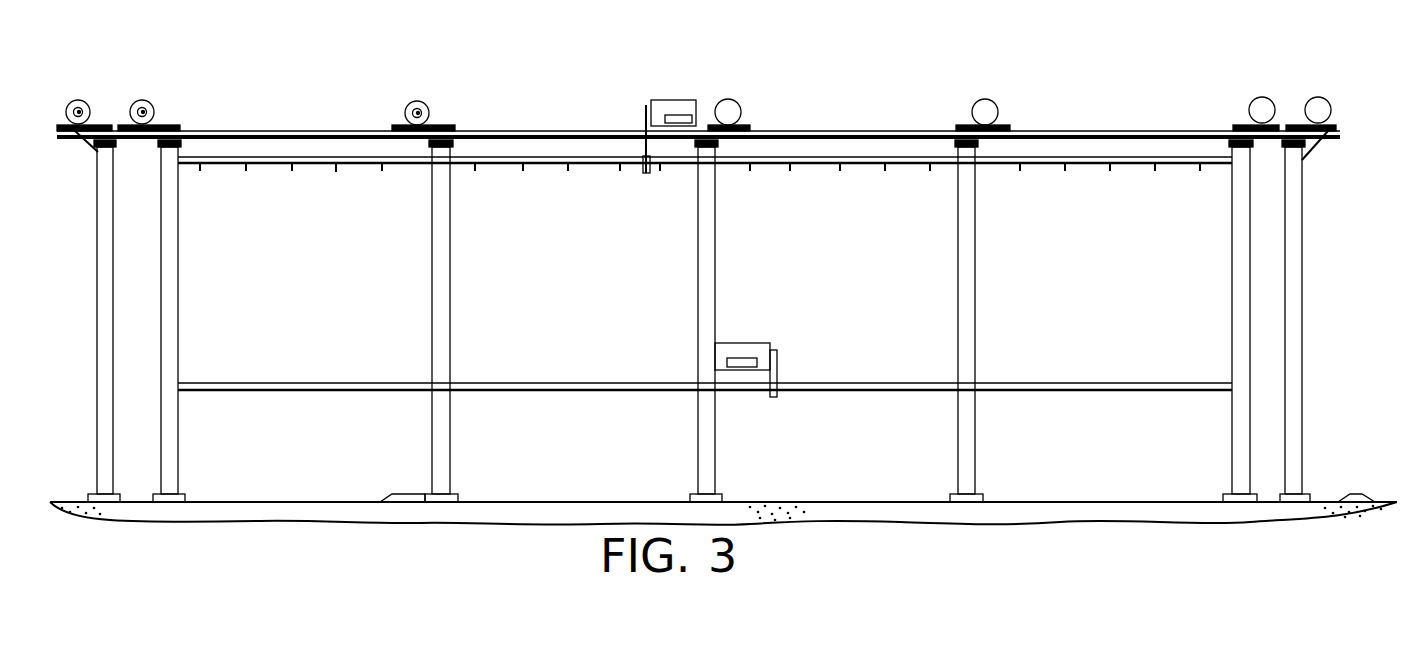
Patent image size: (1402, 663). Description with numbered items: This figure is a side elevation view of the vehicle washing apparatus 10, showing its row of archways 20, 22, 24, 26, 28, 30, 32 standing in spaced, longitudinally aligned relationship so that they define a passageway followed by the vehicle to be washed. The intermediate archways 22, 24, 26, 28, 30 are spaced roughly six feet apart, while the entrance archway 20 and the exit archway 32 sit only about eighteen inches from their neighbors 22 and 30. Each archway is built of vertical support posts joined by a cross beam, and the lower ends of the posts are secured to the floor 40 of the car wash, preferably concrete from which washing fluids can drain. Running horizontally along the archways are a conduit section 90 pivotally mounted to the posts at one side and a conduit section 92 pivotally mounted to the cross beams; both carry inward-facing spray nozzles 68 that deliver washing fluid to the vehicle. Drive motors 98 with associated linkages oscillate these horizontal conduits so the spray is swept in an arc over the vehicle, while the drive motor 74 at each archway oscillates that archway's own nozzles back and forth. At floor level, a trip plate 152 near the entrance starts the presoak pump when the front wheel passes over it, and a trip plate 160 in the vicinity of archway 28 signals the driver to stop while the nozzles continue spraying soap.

The vehicle washing apparatus 10 is at (853, 107).
The archway 20 is at (1303, 237).
The archway 22 is at (1232, 210).
The archway 24 is at (958, 227).
The archway 26 is at (715, 233).
The archway 28 is at (432, 230).
The archway 30 is at (179, 230).
The archway 32 is at (97, 168).
The floor 40 is at (1100, 496).
The spray nozzles 68 is at (332, 170).
The drive motor 74 is at (85, 102).
The horizontally extending conduit section 90 is at (622, 381).
The horizontally extending conduit section 92 is at (498, 168).
The drive motors 98 is at (672, 100).
The trip plate 152 is at (1348, 492).
The trip plate 160 is at (402, 493).